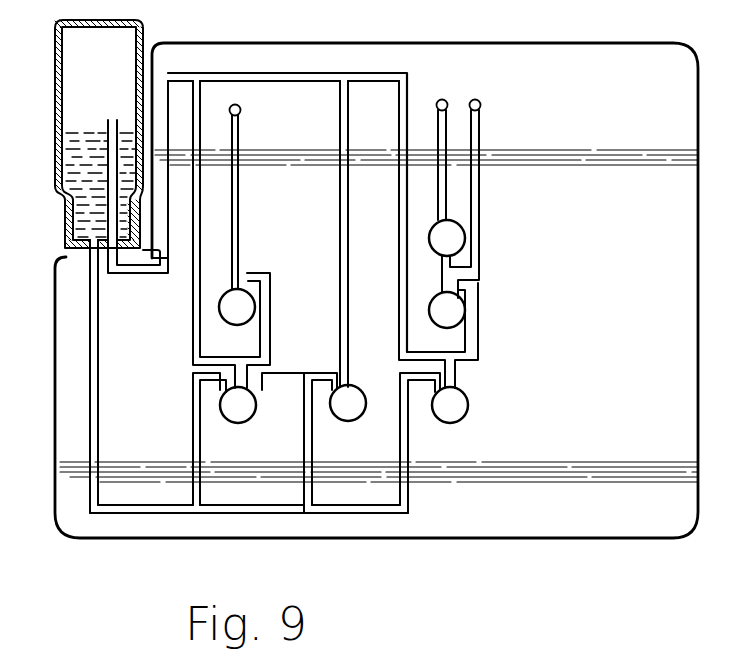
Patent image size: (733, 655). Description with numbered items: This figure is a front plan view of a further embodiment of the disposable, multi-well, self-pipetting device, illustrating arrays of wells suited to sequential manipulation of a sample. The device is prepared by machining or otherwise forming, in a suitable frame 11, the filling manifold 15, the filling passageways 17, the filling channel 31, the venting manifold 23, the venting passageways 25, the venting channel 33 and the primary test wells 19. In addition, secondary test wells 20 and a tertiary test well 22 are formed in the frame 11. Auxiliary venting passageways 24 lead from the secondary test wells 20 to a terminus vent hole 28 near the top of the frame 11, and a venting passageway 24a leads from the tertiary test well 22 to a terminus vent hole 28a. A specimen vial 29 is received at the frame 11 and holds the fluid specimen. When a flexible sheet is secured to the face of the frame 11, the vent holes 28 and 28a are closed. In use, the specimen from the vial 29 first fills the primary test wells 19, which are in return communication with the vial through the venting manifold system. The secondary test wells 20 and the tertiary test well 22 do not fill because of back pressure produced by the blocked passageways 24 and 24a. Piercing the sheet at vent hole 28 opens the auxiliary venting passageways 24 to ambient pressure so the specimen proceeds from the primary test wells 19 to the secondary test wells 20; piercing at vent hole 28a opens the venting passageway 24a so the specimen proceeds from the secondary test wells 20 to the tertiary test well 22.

The frame 11 is at (62, 326).
The filling manifold 15 is at (256, 505).
The filling passageways 17 is at (198, 438).
The primary test wells 19 is at (245, 410).
The secondary test wells 20 is at (226, 298).
The tertiary test well 22 is at (438, 236).
The venting manifold 23 is at (300, 73).
The auxiliary venting passageways 24 is at (480, 134).
The venting passageway 24a is at (450, 191).
The venting passageways 25 is at (193, 322).
The terminus vent hole 28 is at (241, 109).
The terminus vent hole 28a is at (444, 99).
The specimen vial 29 is at (60, 100).
The filling channel 31 is at (99, 350).
The venting channel 33 is at (163, 135).